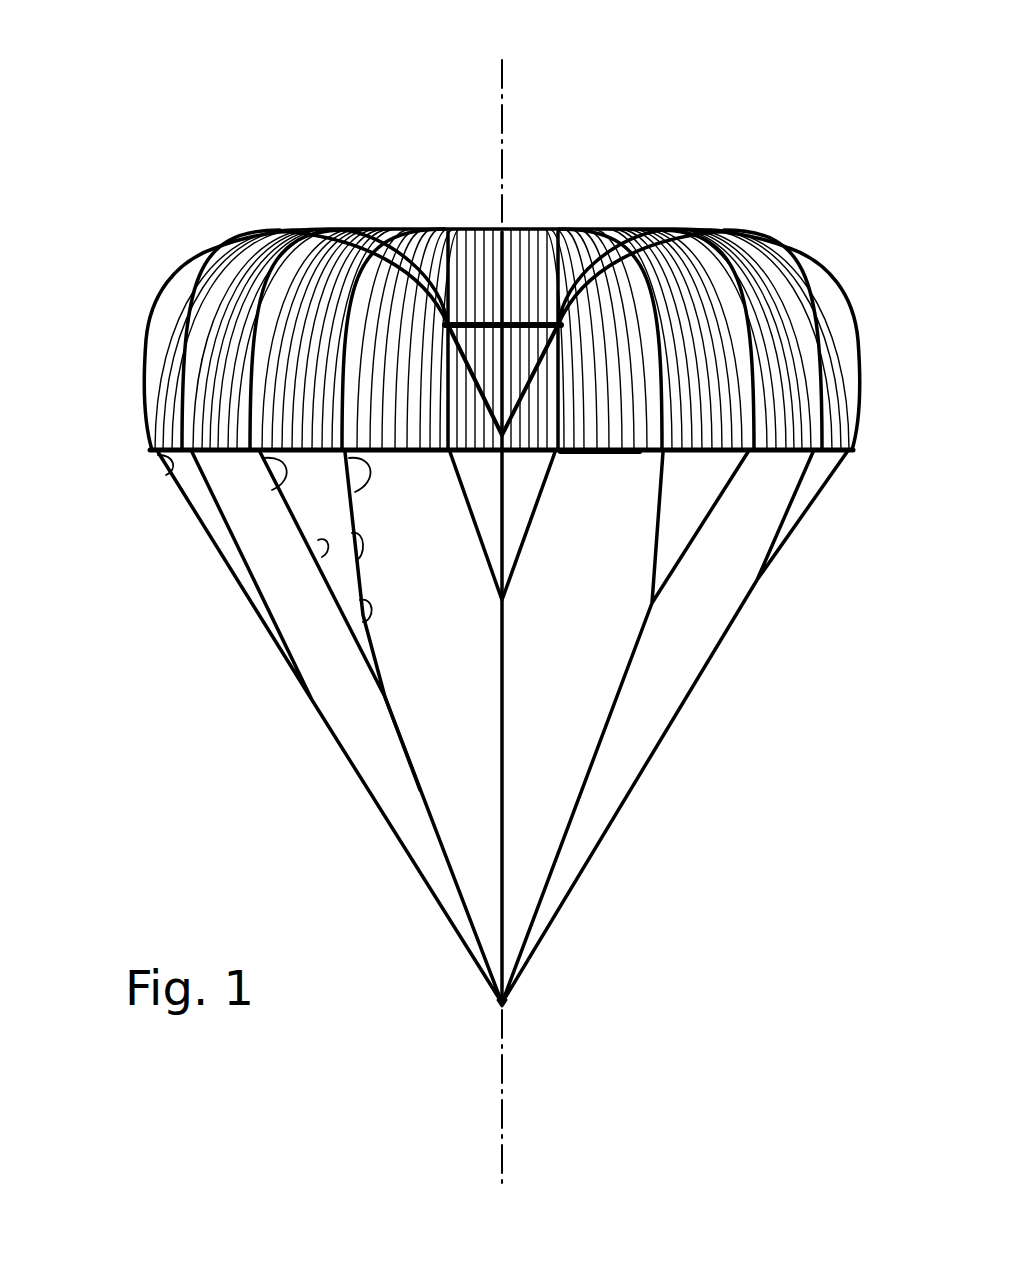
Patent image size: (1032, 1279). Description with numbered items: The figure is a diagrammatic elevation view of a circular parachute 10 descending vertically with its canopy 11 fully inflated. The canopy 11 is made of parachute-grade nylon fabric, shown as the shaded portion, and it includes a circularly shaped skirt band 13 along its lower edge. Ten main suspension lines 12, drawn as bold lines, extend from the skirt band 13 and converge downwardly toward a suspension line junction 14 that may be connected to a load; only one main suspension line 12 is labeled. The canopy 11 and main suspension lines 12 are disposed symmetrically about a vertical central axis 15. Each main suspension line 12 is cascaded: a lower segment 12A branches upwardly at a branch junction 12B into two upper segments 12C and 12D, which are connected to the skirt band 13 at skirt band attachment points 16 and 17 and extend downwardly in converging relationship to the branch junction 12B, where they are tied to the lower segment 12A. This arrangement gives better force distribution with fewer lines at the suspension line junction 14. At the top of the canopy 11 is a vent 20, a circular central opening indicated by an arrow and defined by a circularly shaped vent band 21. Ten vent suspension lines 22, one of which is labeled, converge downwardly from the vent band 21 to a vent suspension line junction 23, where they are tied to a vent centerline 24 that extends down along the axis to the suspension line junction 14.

The circular parachute 10 is at (90, 130).
The canopy 11 is at (205, 268).
The main suspension line 12 is at (444, 862).
The lower segment 12A is at (387, 693).
The branch junction 12B is at (360, 627).
The upper segment 12C is at (357, 563).
The upper segment 12D is at (323, 557).
The skirt band 13 is at (165, 468).
The suspension line junction 14 is at (508, 1003).
The vertical central axis 15 is at (505, 90).
The skirt band attachment point 16 is at (277, 490).
The skirt band attachment point 17 is at (353, 497).
The vent 20 is at (486, 212).
The vent band 21 is at (513, 348).
The vent suspension line 22 is at (528, 401).
The vent suspension line junction 23 is at (590, 455).
The vent centerline 24 is at (507, 517).